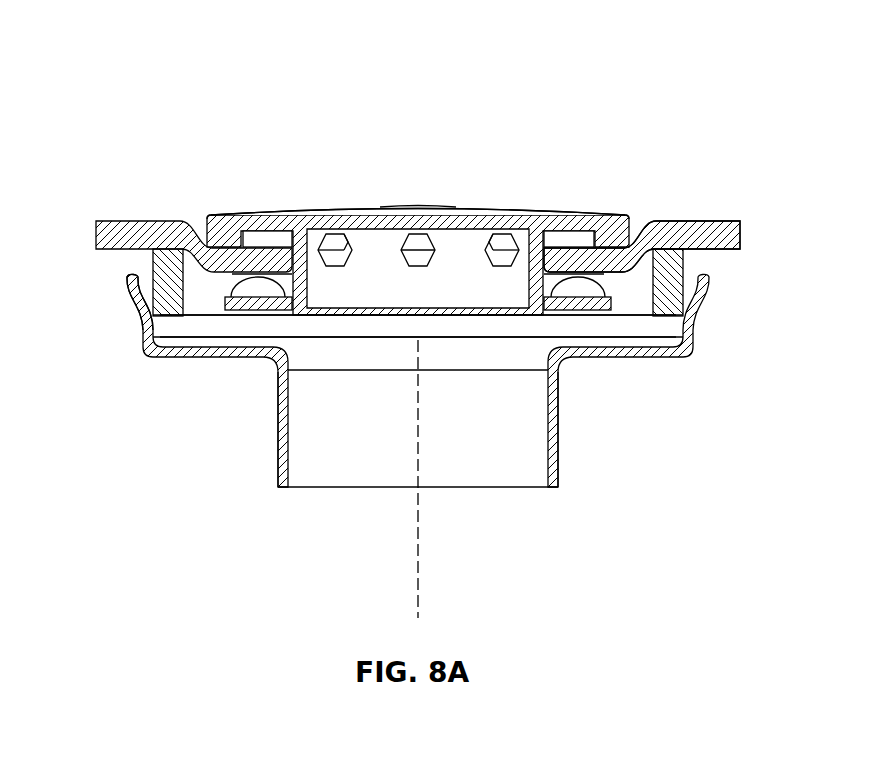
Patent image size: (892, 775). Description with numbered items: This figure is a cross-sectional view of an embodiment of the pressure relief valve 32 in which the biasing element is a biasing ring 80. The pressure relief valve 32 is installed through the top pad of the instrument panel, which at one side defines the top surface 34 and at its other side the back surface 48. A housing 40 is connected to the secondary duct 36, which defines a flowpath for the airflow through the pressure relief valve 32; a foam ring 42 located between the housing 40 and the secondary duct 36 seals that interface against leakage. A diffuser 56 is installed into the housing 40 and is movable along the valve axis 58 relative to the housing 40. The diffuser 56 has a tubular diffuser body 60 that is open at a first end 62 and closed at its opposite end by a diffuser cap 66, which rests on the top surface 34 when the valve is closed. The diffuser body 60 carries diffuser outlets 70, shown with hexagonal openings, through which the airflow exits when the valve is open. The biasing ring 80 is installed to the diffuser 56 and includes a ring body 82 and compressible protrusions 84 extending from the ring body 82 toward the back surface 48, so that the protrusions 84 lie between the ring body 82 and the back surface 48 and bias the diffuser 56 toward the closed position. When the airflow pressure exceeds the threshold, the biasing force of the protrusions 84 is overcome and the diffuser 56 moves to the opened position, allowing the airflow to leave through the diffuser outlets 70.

The pressure relief valve 32 is at (543, 43).
The top surface 34 is at (704, 221).
The secondary duct 36 is at (507, 433).
The housing 40 is at (691, 303).
The foam ring 42 is at (157, 303).
The back surface 48 is at (697, 243).
The diffuser 56 is at (342, 211).
The valve axis 58 is at (420, 593).
The diffuser body 60 is at (457, 265).
The first end 62 is at (294, 312).
The diffuser cap 66 is at (420, 211).
The diffuser outlets 70 is at (418, 233).
The biasing ring 80 is at (240, 310).
The ring body 82 is at (612, 300).
The compressible protrusions 84 is at (562, 276).